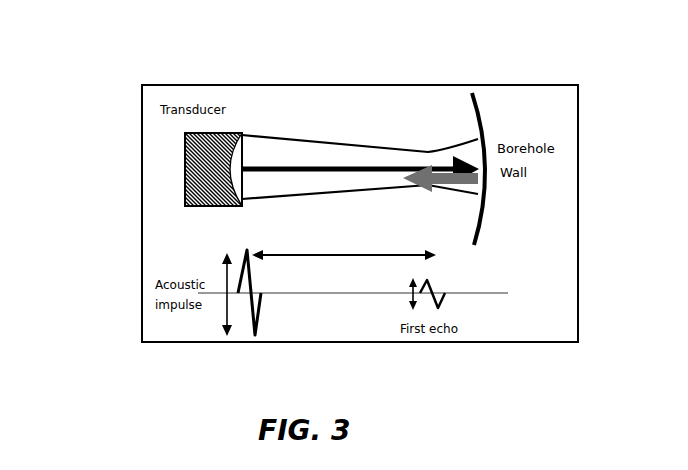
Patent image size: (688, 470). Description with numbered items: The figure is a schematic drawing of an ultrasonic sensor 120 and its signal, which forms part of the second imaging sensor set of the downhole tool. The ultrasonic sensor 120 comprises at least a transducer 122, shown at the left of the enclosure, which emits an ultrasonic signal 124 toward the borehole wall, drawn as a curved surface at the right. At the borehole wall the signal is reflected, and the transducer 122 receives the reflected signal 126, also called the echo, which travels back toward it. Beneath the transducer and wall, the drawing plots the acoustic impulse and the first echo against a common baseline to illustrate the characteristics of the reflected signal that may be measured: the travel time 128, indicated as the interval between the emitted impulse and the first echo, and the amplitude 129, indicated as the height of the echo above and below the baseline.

The ultrasonic sensor 120 is at (112, 70).
The transducer 122 is at (185, 157).
The ultrasonic signal 124 is at (335, 133).
The reflected signal 126 is at (373, 197).
The travel time 128 is at (344, 248).
The amplitude 129 is at (476, 290).